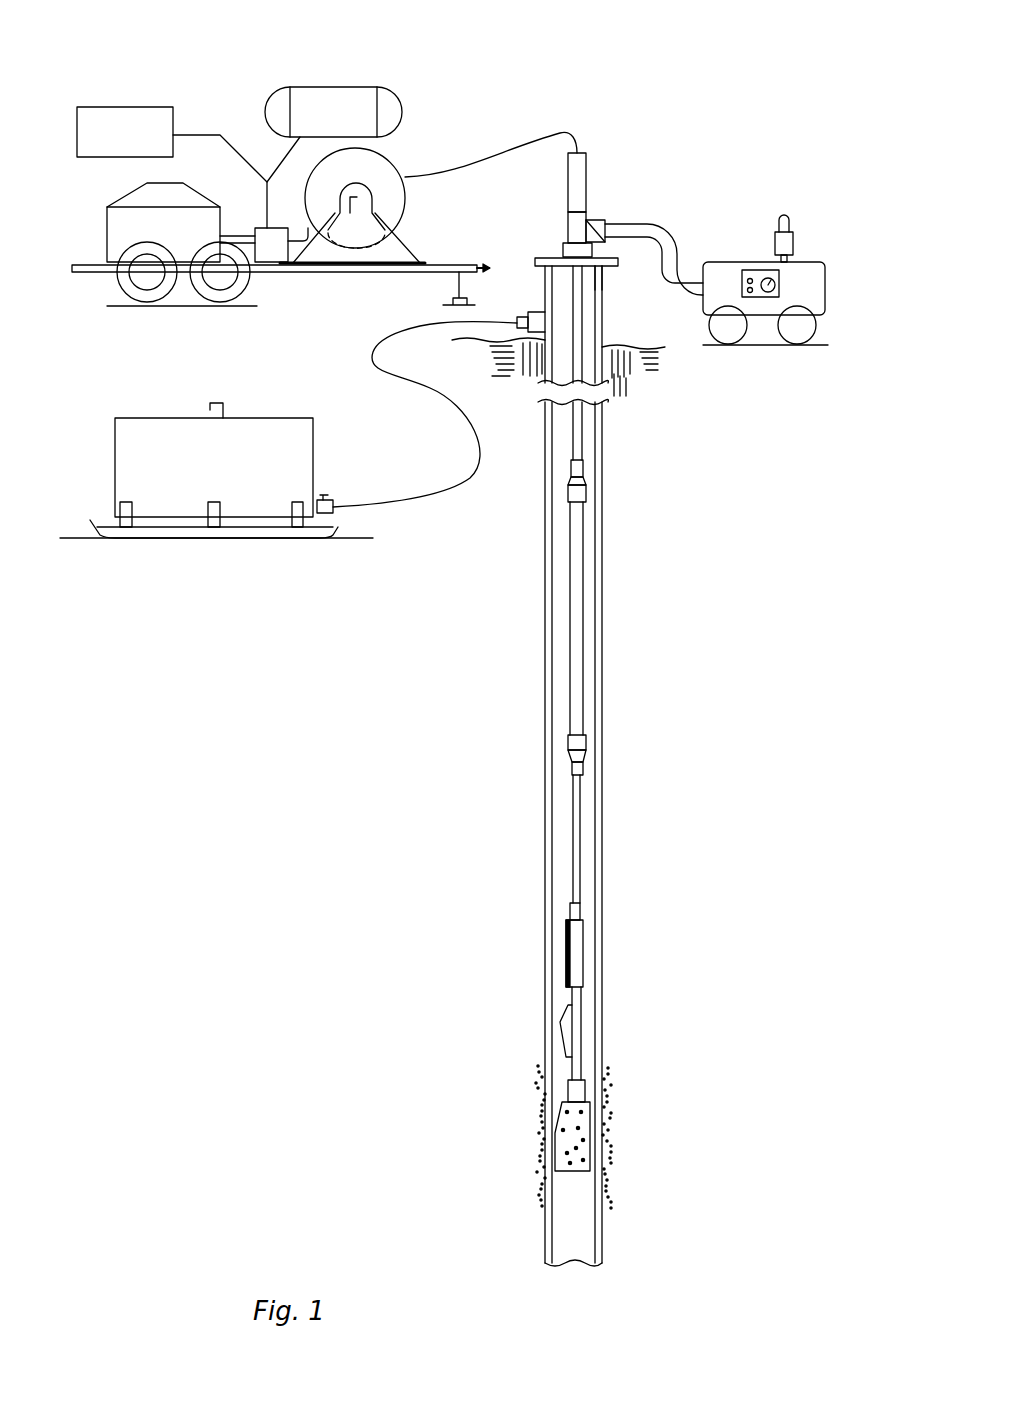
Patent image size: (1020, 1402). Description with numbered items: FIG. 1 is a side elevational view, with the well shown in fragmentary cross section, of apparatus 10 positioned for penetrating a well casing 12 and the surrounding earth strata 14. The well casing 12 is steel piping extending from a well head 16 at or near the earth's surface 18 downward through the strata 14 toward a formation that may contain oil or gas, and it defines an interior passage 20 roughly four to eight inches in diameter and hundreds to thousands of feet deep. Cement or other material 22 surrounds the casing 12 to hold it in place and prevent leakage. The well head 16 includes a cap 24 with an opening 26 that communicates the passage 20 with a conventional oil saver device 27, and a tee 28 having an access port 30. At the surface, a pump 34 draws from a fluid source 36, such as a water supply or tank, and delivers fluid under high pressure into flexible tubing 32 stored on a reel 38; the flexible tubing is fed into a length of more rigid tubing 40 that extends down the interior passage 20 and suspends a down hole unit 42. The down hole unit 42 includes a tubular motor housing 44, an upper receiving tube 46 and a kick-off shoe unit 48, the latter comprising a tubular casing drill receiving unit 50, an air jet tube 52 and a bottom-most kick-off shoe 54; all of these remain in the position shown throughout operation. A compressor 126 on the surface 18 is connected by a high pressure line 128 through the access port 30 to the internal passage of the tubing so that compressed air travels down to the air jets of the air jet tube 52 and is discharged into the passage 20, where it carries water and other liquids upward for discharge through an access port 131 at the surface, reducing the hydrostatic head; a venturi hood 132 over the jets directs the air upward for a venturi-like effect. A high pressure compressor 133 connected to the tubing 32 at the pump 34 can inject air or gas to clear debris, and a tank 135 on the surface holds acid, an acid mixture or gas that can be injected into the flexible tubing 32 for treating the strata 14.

The apparatus 10 is at (713, 1228).
The well casing 12 is at (603, 835).
The earth strata 14 is at (605, 1068).
The well head 16 is at (604, 318).
The earth's surface 18 is at (672, 338).
The interior passage 20 is at (558, 672).
The cement or other material 22 is at (604, 1167).
The cap 24 is at (551, 260).
The opening 26 is at (601, 267).
The oil saver device 27 is at (588, 162).
The tee 28 is at (594, 220).
The access port 30 is at (606, 216).
The flexible tubing 32 is at (533, 133).
The pump 34 is at (280, 265).
The fluid source 36 is at (108, 205).
The reel 38 is at (405, 188).
The rigid tubing 40 is at (583, 438).
The down hole unit 42 is at (570, 572).
The tubular motor housing 44 is at (585, 612).
The upper receiving tube 46 is at (586, 741).
The kick-off shoe unit 48 is at (563, 913).
The tubular casing drill receiving unit 50 is at (585, 927).
The air jet tube 52 is at (582, 1022).
The kick-off shoe 54 is at (558, 1123).
The compressor 126 is at (827, 291).
The high pressure line 128 is at (678, 244).
The access port 131 is at (540, 313).
The venturi hood 132 is at (563, 1033).
The high pressure compressor 133 is at (130, 107).
The tank 135 is at (332, 87).